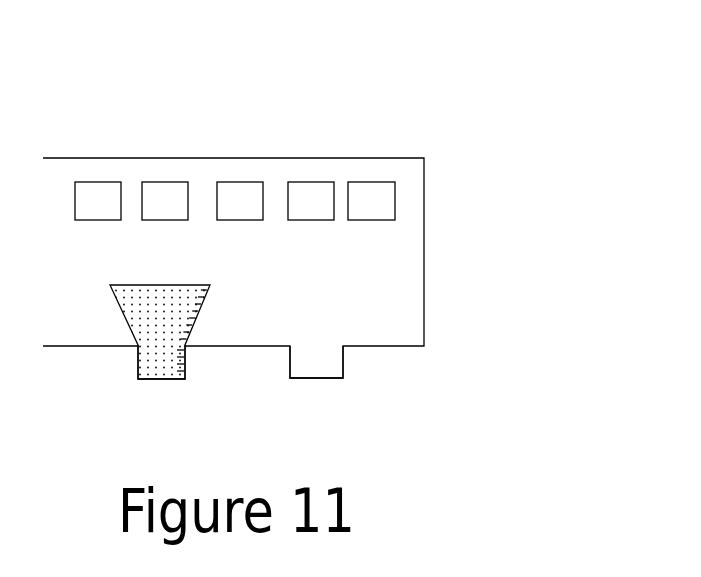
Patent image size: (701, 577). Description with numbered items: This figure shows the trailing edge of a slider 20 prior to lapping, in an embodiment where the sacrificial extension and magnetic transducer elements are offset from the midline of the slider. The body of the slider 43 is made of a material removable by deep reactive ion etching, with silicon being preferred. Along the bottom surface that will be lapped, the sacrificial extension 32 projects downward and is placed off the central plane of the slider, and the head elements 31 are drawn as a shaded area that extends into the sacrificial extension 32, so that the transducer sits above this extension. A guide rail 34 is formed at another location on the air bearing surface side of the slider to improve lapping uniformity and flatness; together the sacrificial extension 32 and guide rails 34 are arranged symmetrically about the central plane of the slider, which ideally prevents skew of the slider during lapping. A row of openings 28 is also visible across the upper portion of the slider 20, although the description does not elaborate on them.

The slider 20 is at (142, 130).
The openings 28 is at (100, 208).
The head elements 31 is at (172, 297).
The sacrificial extension 32 is at (148, 368).
The guide rails 34 is at (324, 367).
The body of the slider 43 is at (395, 321).